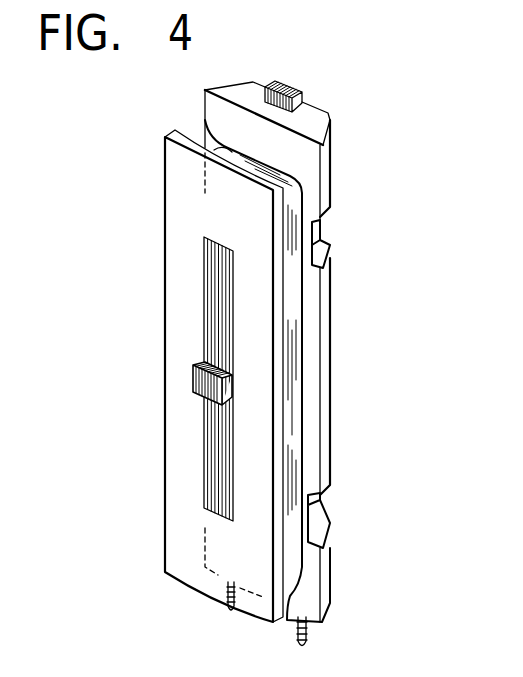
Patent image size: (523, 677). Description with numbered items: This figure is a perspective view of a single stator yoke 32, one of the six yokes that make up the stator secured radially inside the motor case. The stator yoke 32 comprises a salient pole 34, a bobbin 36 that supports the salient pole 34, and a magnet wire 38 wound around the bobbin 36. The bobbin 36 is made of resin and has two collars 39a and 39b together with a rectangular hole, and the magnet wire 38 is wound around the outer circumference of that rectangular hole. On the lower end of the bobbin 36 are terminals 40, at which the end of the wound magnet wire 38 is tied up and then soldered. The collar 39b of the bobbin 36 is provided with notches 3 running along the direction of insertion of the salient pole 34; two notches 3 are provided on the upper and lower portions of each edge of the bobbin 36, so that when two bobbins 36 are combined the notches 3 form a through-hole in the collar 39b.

The stator yoke 32 is at (146, 232).
The salient pole 34 is at (213, 450).
The bobbin 36 is at (152, 324).
The magnet wire 38 is at (205, 117).
The collar 39a is at (262, 293).
The collar 39b is at (313, 123).
The notch 3 is at (325, 233).
The terminal 40 is at (207, 599).